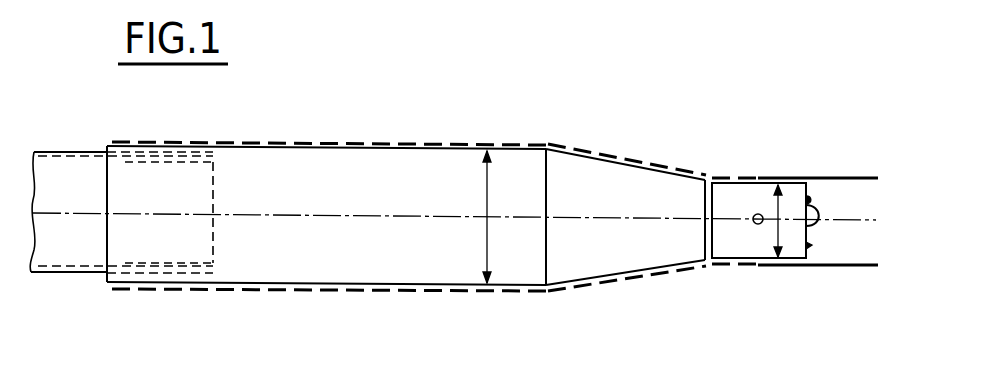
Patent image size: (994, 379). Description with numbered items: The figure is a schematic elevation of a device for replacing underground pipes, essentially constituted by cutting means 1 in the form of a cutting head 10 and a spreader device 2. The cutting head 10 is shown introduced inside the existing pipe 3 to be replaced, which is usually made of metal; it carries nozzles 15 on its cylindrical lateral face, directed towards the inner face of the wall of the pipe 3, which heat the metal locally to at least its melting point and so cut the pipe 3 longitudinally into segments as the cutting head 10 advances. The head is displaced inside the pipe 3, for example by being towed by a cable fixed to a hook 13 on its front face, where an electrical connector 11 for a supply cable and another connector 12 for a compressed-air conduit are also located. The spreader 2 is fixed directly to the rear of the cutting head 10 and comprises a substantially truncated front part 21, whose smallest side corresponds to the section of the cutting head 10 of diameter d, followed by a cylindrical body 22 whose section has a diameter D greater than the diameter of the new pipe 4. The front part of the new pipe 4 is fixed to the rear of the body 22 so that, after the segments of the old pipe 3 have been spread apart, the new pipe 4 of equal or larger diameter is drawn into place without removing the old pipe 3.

The cutting means 1 is at (733, 193).
The spreader device 2 is at (626, 192).
The pipe to be replaced 3 is at (827, 267).
The new pipe 4 is at (66, 150).
The cutting head 10 is at (737, 264).
The electrical connector 11 is at (812, 199).
The connector 12 is at (812, 245).
The hook 13 is at (822, 218).
The nozzles 15 is at (758, 210).
The truncated front part 21 is at (651, 183).
The cylindrical body 22 is at (282, 165).
The diameter of the cylindrical body D is at (495, 217).
The diameter of the cutting head d is at (783, 221).